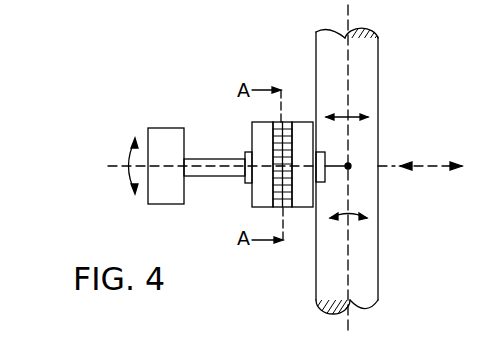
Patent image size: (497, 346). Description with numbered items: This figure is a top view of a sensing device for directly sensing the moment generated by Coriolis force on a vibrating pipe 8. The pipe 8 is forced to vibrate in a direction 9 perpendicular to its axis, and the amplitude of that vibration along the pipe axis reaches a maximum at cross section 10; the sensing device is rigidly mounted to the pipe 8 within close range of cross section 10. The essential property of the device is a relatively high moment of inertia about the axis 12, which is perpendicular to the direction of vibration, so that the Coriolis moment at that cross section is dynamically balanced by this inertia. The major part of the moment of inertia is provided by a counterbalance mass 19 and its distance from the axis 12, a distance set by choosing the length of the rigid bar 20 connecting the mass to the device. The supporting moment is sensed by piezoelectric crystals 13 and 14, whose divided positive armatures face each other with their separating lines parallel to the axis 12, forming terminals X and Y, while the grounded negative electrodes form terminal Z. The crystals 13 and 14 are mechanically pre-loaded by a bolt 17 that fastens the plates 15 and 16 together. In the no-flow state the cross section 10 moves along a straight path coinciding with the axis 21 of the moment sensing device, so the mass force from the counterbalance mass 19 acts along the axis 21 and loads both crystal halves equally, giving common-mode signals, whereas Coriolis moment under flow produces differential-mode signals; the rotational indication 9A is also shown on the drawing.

The pipe 8 is at (380, 68).
The direction of vibration 9 is at (432, 168).
The rotational movement arrow 9A is at (128, 177).
The cross section 10 is at (350, 165).
The axis 12 is at (350, 168).
The piezoelectric crystal 13 is at (299, 122).
The piezoelectric crystal 14 is at (280, 124).
The plate 15 is at (252, 196).
The plate 16 is at (304, 209).
The bolt 17 is at (276, 191).
The counterbalance mass 19 is at (160, 128).
The rigid bar 20 is at (208, 159).
The axis of moment sensing device 21 is at (112, 163).